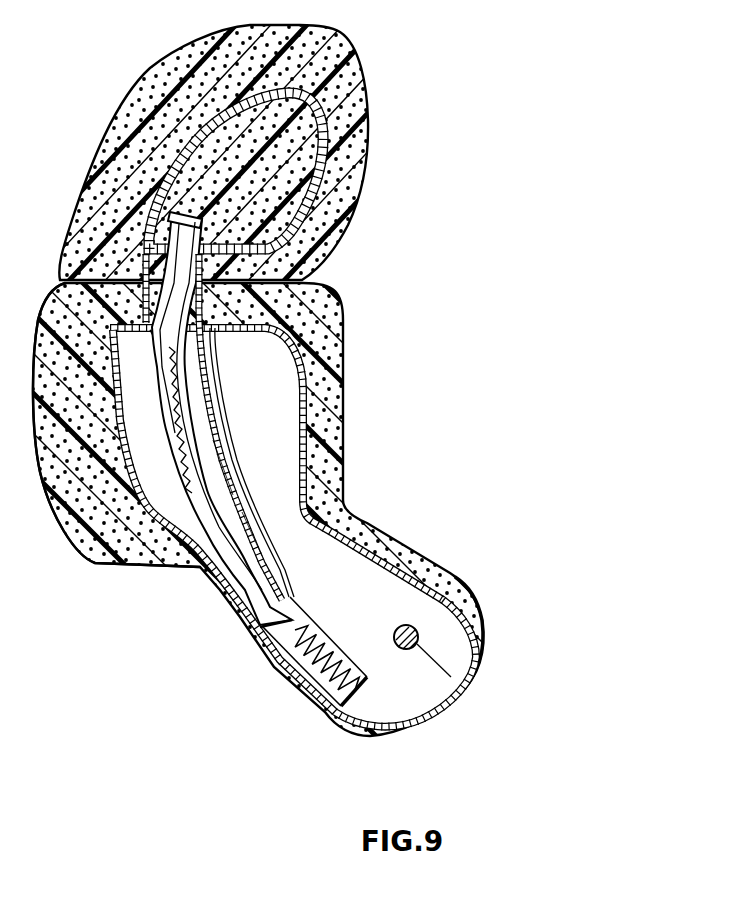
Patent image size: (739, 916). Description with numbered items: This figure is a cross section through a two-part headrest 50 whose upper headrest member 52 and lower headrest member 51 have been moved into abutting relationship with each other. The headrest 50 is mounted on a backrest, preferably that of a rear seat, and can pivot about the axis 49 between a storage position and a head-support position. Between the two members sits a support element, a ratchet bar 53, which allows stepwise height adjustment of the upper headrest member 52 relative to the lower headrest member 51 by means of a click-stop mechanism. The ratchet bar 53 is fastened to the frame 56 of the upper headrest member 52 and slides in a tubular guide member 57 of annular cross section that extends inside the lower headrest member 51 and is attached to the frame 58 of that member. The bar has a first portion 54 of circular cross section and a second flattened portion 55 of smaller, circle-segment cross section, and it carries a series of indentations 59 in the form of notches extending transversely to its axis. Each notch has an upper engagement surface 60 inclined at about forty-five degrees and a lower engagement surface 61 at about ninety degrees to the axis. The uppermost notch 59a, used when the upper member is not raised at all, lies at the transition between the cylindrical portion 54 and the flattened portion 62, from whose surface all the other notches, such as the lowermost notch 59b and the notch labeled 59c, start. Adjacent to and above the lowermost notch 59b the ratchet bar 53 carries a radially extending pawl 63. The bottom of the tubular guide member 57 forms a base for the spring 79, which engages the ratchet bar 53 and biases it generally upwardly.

The axis 49 is at (468, 677).
The headrest 50 is at (350, 377).
The lower headrest member 51 is at (93, 547).
The upper headrest member 52 is at (366, 183).
The ratchet bar 53 is at (218, 457).
The first portion 54 is at (203, 226).
The second flattened portion 55 is at (258, 602).
The frame 56 is at (330, 137).
The tubular guide member 57 is at (302, 697).
The frame 58 is at (462, 586).
The indentations 59 is at (197, 490).
The uppermost notch 59a is at (238, 322).
The lowermost notch 59b is at (229, 536).
The lining section 59c is at (222, 494).
The upper engagement surface 60 is at (200, 373).
The lower engagement surface 61 is at (183, 402).
The flattened portion 62 is at (266, 634).
The pawl 63 is at (200, 556).
The spring 79 is at (339, 716).